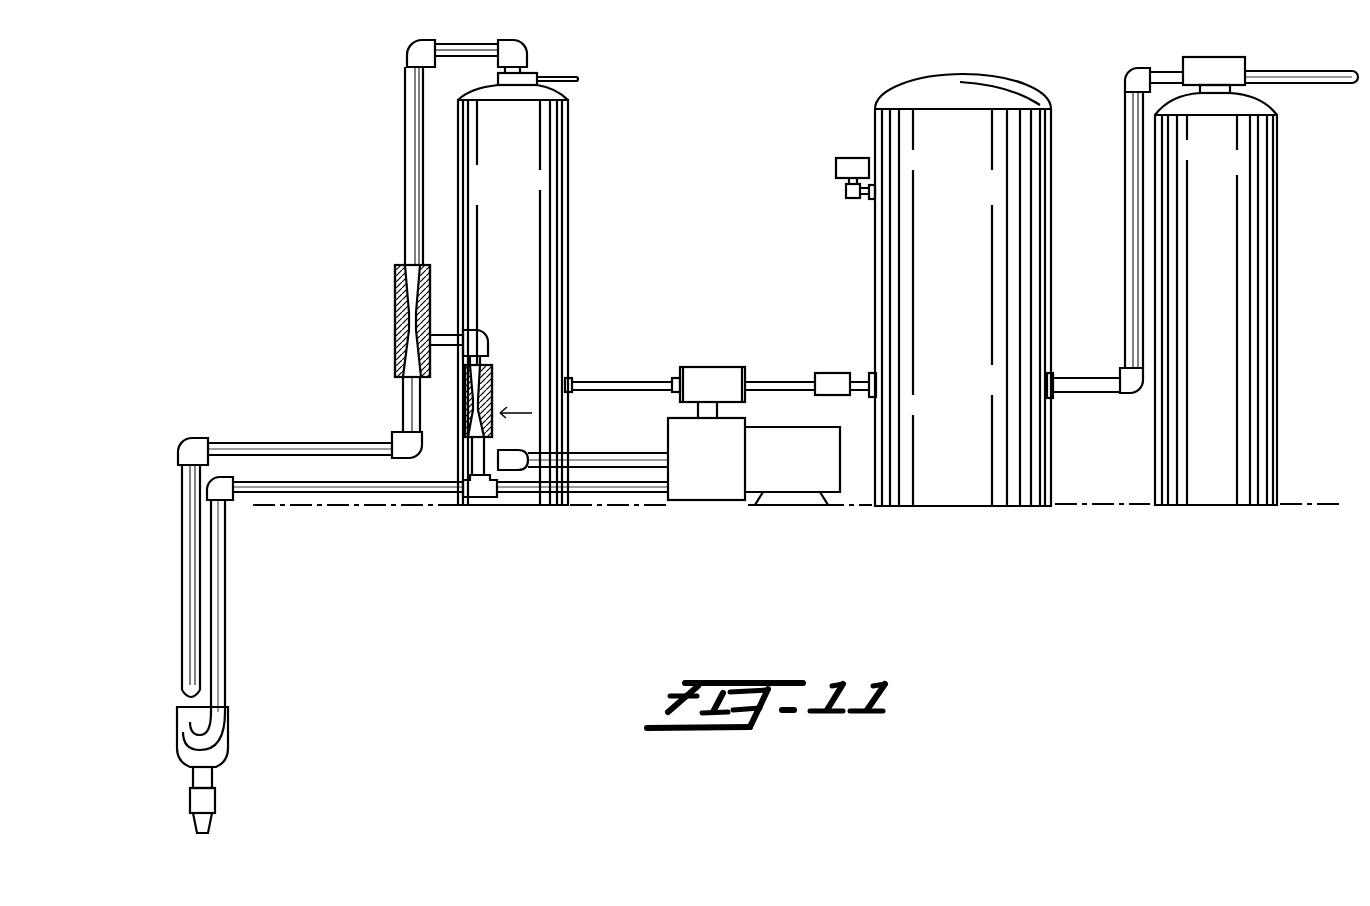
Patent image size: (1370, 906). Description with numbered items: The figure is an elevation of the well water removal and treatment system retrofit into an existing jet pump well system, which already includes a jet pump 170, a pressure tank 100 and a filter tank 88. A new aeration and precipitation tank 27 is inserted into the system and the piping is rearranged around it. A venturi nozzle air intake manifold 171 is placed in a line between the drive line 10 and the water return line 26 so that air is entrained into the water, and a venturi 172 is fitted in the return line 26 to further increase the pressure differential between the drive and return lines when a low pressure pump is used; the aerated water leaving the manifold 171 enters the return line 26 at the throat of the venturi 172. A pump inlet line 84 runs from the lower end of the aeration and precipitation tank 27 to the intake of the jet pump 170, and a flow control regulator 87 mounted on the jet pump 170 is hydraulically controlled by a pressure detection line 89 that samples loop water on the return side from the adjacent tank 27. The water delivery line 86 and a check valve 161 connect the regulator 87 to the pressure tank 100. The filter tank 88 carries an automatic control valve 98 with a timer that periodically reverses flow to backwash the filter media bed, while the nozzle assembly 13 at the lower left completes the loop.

The water return line 26 is at (405, 195).
The aeration and precipitation tank 27 is at (569, 194).
The venturi 172 is at (395, 346).
The venturi nozzle air intake manifold 171 is at (497, 382).
The drive line 10 is at (594, 495).
The pump inlet line 84 is at (598, 452).
The flow control regulator 87 is at (712, 367).
The pressure detection line 89 is at (620, 382).
The water delivery line 86 is at (780, 380).
The check valve 161 is at (830, 373).
The jet pump 170 is at (822, 478).
The pressure tank 100 is at (876, 258).
The filter tank 88 is at (1278, 258).
The automatic control valve 98 is at (1200, 63).
The nozzle 13 is at (226, 746).